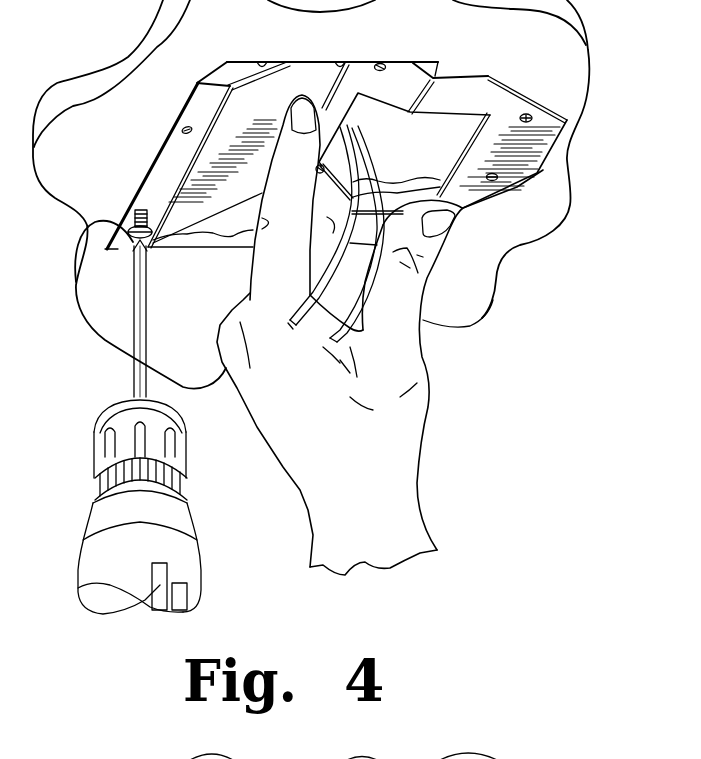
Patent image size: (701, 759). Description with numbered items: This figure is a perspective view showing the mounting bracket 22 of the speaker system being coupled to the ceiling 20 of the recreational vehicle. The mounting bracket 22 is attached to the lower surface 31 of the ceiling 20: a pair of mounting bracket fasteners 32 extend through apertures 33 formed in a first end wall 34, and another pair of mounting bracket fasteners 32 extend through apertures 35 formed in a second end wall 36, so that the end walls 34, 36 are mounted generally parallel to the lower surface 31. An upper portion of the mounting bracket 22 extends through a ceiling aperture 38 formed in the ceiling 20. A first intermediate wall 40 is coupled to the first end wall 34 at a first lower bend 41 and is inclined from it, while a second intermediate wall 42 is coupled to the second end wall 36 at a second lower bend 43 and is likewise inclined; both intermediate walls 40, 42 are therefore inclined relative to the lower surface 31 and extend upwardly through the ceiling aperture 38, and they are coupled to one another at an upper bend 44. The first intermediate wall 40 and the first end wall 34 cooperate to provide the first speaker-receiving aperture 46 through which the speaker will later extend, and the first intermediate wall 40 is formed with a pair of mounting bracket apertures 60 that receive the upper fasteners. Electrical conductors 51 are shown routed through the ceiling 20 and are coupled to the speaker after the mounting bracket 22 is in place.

The ceiling 20 is at (502, 214).
The mounting bracket 22 is at (446, 98).
The lower surface 31 is at (485, 297).
The mounting bracket fasteners 32 is at (80, 238).
The apertures 33 is at (528, 114).
The first end wall 34 is at (551, 170).
The apertures 35 is at (179, 128).
The second end wall 36 is at (170, 167).
The ceiling aperture 38 is at (281, 61).
The first intermediate wall 40 is at (408, 62).
The first lower bend 41 is at (434, 88).
The second intermediate wall 42 is at (273, 90).
The second lower bend 43 is at (218, 104).
The upper bend 44 is at (340, 62).
The first speaker-receiving aperture 46 is at (397, 110).
The electrical conductors 51 is at (347, 167).
The mounting bracket apertures 60 is at (382, 62).